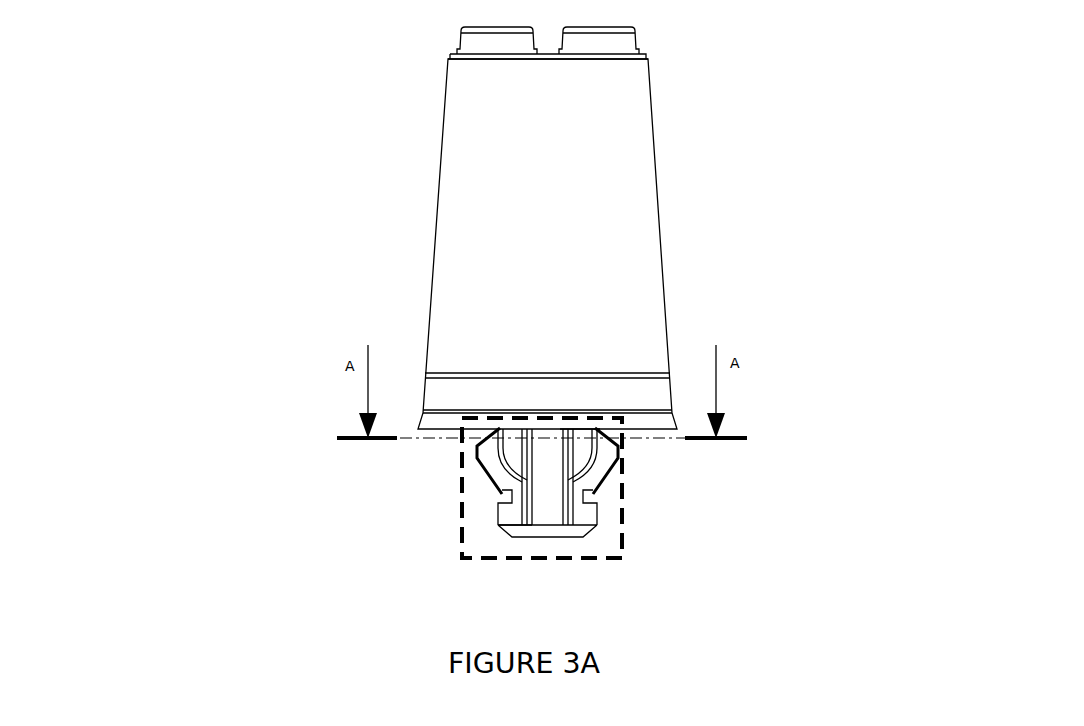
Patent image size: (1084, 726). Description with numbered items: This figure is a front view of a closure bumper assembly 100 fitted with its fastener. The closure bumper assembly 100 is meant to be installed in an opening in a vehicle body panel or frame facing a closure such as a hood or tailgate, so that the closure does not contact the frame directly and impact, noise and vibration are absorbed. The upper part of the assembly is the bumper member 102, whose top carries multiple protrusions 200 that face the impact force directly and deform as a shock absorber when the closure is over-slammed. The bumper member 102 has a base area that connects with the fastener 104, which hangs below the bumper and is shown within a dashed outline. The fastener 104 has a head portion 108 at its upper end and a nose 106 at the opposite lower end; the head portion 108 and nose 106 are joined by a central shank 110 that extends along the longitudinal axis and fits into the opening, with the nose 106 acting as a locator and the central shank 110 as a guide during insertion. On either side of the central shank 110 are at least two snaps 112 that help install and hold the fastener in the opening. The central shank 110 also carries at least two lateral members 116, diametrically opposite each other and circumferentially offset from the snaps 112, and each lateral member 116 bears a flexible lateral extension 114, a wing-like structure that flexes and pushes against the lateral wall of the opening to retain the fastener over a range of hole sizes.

The closure bumper assembly 100 is at (250, 593).
The bumper member 102 is at (473, 215).
The protrusions 200 is at (490, 42).
The fastener 104 is at (625, 494).
The nose 106 is at (576, 536).
The head portion 108 is at (565, 431).
The central shank 110 is at (527, 522).
The snaps 112 is at (485, 468).
The flexible lateral extension 114 is at (589, 452).
The lateral members 116 is at (557, 489).